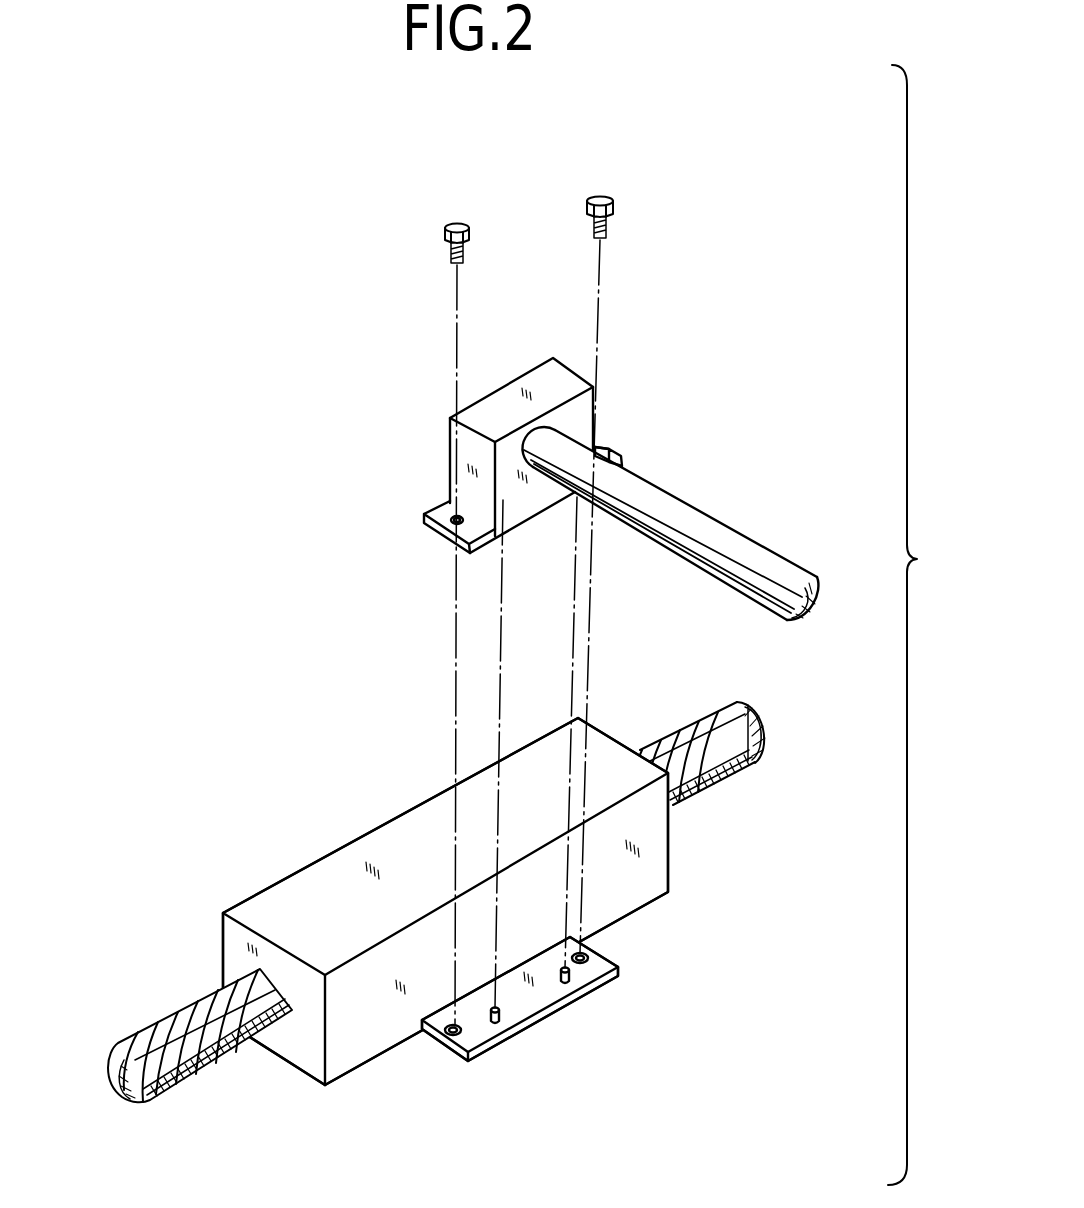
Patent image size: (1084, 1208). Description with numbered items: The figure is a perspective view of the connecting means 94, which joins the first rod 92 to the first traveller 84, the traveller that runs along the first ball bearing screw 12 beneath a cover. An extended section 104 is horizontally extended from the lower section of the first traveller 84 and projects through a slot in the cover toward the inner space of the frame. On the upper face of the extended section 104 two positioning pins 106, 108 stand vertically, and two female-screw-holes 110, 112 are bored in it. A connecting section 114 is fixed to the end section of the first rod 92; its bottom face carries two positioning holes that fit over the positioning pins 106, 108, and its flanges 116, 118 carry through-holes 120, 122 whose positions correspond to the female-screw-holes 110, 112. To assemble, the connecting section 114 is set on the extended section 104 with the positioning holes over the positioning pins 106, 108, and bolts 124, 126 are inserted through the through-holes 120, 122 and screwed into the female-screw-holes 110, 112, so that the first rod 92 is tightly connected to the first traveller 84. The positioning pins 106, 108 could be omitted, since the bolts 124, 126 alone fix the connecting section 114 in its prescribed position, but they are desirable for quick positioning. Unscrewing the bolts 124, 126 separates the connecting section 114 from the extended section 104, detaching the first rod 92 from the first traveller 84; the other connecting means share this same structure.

The first ball bearing screw 12 is at (192, 1008).
The first traveller 84 is at (300, 888).
The first rod 92 is at (756, 553).
The connecting means 94 is at (631, 1041).
The extended section 104 is at (482, 1056).
The positioning pin 106 is at (570, 978).
The positioning pin 108 is at (500, 1014).
The female-screw-hole 110 is at (585, 954).
The female-screw-hole 112 is at (452, 1036).
The connecting section 114 is at (533, 470).
The flange 116 is at (627, 462).
The flange 118 is at (416, 556).
The through-hole 120 is at (602, 446).
The through-hole 122 is at (448, 527).
The bolt 124 is at (613, 222).
The bolt 126 is at (450, 248).